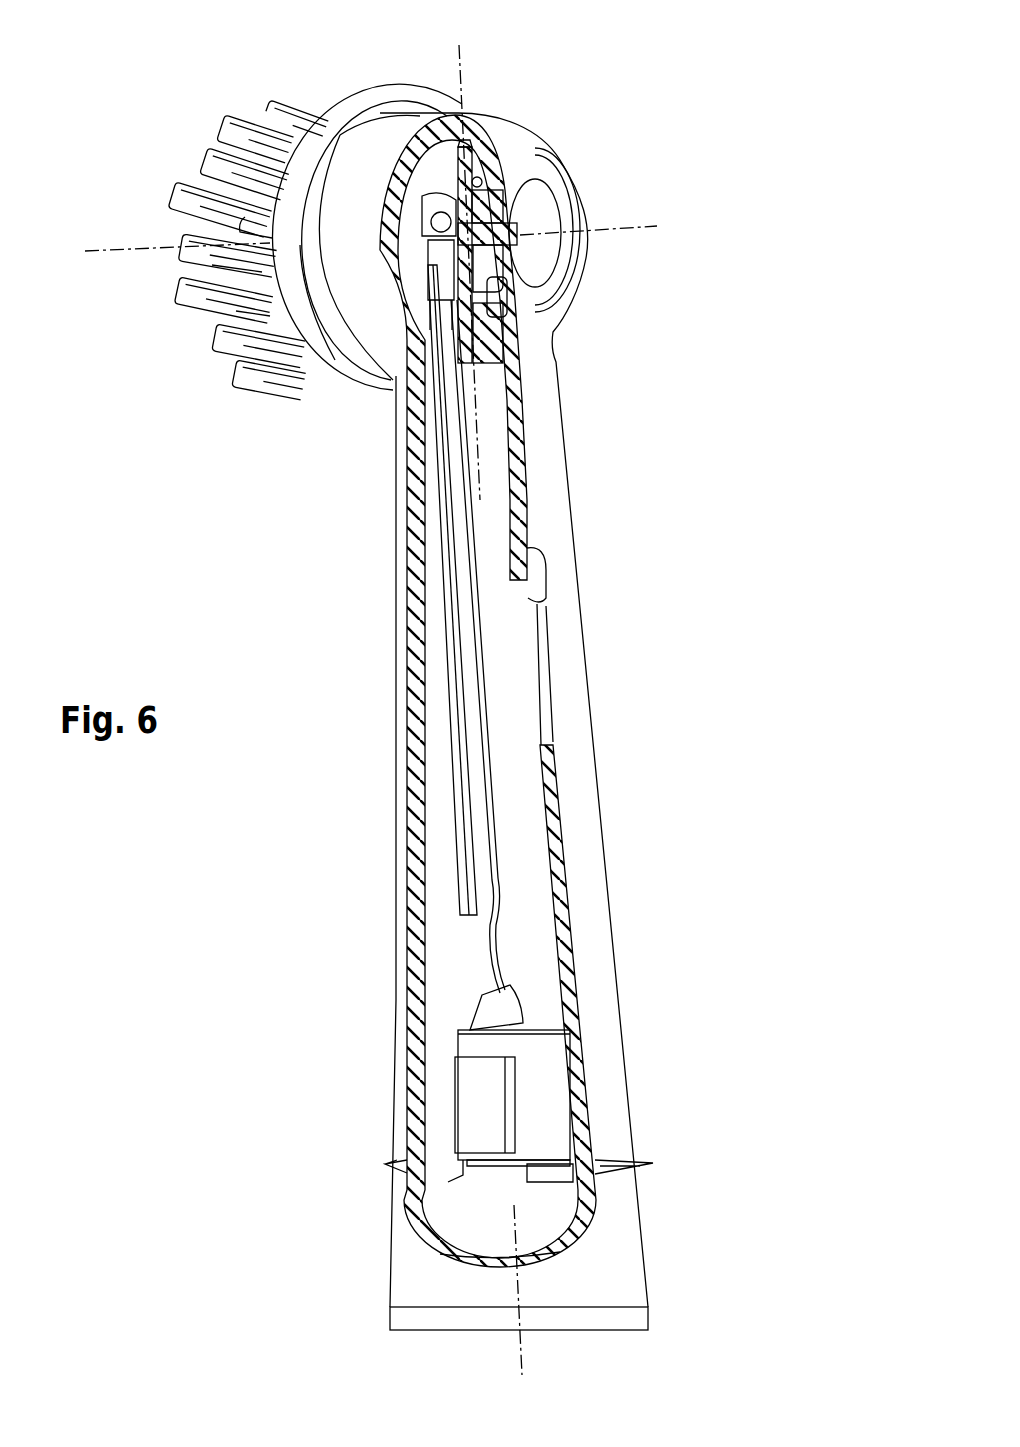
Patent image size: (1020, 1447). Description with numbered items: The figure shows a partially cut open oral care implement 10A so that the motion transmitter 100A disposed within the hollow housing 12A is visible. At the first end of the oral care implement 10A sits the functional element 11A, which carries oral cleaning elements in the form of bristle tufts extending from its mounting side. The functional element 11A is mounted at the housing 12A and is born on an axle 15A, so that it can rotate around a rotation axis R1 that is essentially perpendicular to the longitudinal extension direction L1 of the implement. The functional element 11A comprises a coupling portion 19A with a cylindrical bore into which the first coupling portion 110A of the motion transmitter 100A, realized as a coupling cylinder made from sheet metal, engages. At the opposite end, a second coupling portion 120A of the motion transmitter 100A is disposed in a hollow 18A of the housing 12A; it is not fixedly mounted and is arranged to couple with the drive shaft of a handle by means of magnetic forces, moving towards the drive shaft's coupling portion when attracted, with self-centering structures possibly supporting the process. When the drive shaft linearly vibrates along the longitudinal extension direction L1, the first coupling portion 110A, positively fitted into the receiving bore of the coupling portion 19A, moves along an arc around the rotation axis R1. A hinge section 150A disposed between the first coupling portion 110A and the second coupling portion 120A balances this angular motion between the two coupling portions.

The oral care implement 10A is at (688, 573).
The functional element 11A is at (352, 80).
The housing 12A is at (418, 996).
The axle 15A is at (520, 240).
The hollow 18A is at (478, 1232).
The coupling portion 19A is at (470, 185).
The motion transmitter 100A is at (497, 800).
The first coupling portion 110A is at (443, 190).
The second coupling portion 120A is at (547, 1106).
The hinge section 150A is at (502, 950).
The longitudinal extension direction L1 is at (462, 57).
The rotation axis R1 is at (89, 250).